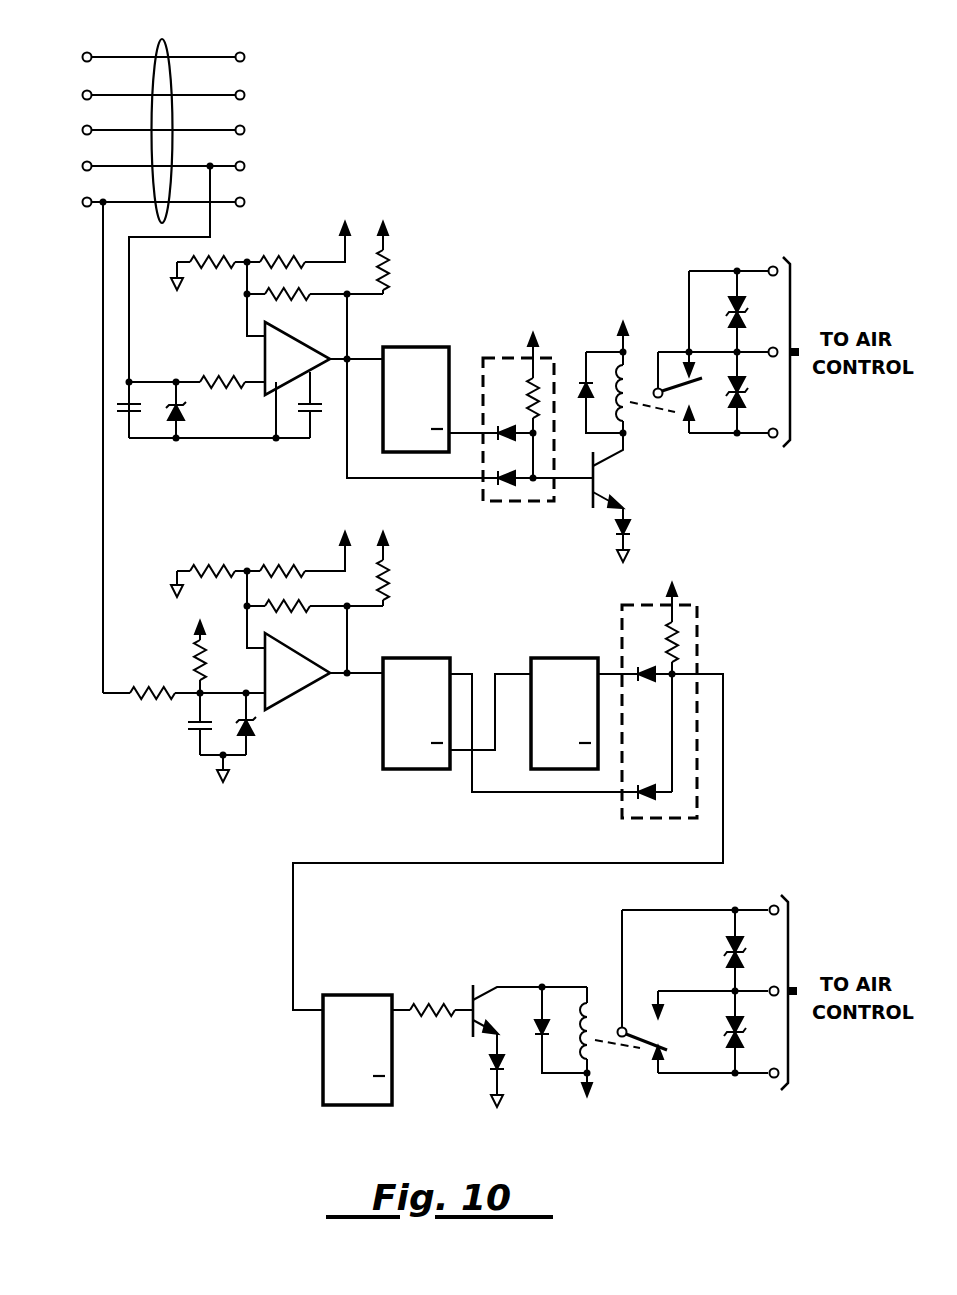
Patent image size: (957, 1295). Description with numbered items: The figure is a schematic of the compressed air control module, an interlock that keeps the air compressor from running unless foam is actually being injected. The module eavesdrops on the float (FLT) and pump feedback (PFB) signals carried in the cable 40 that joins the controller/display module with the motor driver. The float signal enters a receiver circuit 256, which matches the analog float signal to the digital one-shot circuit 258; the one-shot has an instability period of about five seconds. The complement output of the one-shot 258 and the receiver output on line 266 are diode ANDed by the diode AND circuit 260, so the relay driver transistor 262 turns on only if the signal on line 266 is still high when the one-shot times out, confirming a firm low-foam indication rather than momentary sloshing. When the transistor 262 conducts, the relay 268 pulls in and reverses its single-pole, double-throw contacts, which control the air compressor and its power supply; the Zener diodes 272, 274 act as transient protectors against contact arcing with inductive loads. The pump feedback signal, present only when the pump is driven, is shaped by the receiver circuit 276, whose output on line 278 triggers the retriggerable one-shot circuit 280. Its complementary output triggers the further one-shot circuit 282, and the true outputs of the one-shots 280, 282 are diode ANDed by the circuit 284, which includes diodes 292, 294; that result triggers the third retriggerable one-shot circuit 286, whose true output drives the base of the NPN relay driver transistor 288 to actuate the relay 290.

The cable 40 is at (165, 42).
The receiver circuit 256 is at (249, 447).
The one-shot circuit 258 is at (422, 347).
The diode AND circuit 260 is at (516, 358).
The relay driver transistor 262 is at (606, 500).
The line 266 is at (468, 484).
The relay 268 is at (678, 366).
The Zener diode 272 is at (752, 313).
The Zener diode 274 is at (752, 393).
The receiver circuit 276 is at (296, 698).
The line 278 is at (365, 680).
The retriggerable one-shot circuit 280 is at (423, 658).
The one-shot circuit 282 is at (562, 658).
The diode AND circuit 284 is at (702, 690).
The retriggerable one-shot circuit 286 is at (363, 995).
The relay driver transistor 288 is at (484, 1041).
The relay 290 is at (602, 998).
The diode 292 is at (656, 785).
The diode 294 is at (654, 682).